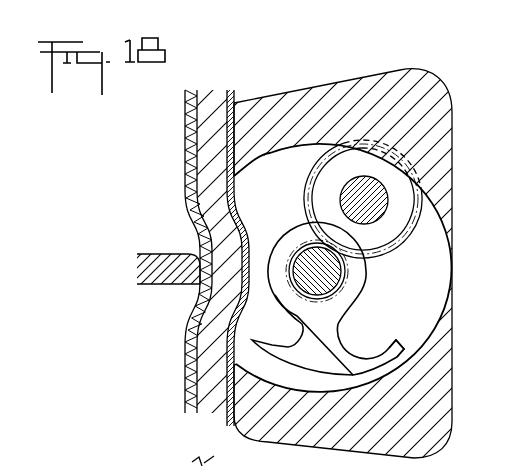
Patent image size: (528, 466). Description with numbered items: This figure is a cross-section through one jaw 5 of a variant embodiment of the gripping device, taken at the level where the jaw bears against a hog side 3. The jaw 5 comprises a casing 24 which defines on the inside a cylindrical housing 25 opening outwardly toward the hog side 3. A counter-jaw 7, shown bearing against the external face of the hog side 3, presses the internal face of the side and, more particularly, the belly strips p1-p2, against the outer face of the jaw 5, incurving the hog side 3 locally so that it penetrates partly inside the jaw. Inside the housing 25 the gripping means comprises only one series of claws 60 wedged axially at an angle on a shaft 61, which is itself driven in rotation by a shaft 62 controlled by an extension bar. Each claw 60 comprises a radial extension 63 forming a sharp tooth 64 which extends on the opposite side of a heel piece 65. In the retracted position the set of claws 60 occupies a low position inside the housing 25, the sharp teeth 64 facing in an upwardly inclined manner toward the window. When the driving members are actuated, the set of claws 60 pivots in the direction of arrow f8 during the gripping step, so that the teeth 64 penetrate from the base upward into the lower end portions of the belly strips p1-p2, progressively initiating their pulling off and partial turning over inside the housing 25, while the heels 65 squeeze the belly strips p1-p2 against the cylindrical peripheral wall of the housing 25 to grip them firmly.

The hog sides 3 is at (212, 346).
The jaw 5 is at (332, 70).
The counter-jaw 7 is at (164, 276).
The casing 24 is at (372, 95).
The cylindrical housing 25 is at (284, 154).
The claw 60 is at (358, 332).
The shaft 61 is at (304, 256).
The shaft 62 is at (370, 201).
The radial extension 63 is at (307, 308).
The sharp tooth 64 is at (295, 350).
The heel piece 65 is at (390, 357).
The belly strips p1-p2 is at (232, 203).
The arrow f8 is at (405, 336).